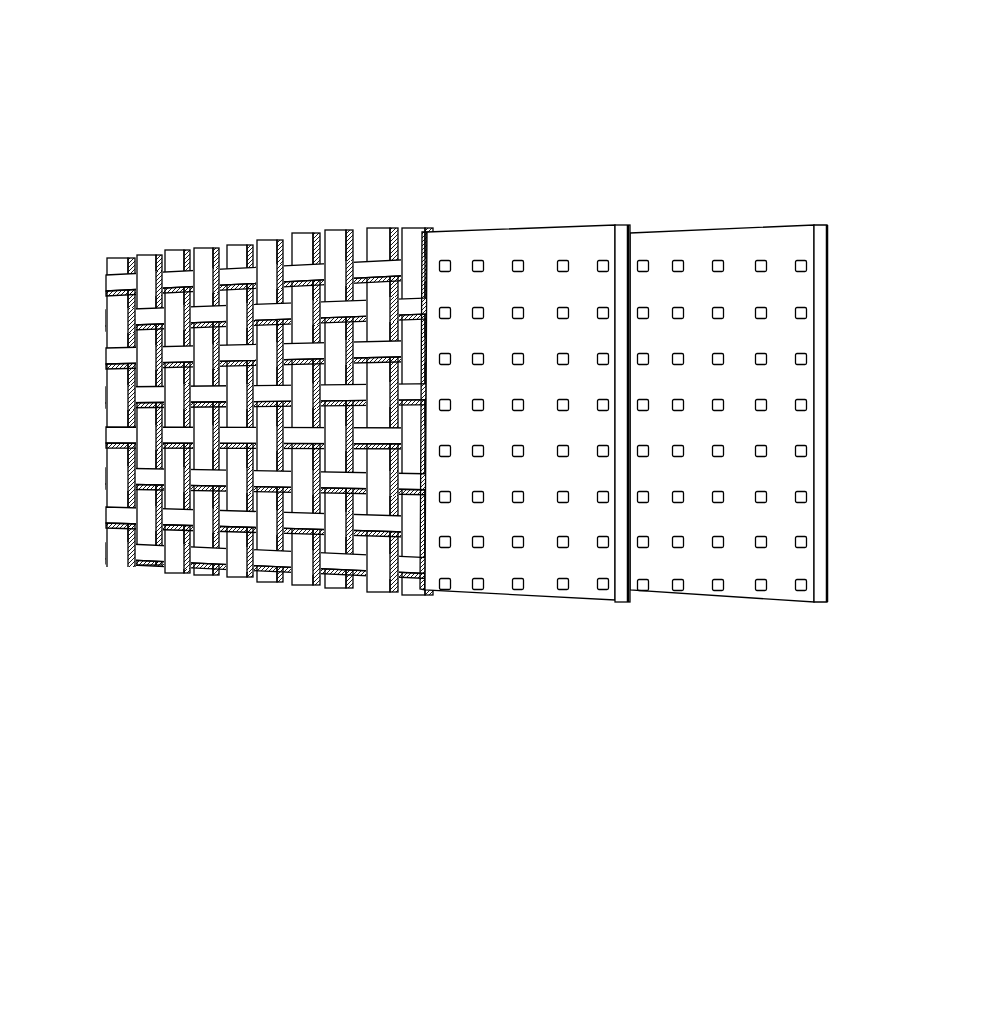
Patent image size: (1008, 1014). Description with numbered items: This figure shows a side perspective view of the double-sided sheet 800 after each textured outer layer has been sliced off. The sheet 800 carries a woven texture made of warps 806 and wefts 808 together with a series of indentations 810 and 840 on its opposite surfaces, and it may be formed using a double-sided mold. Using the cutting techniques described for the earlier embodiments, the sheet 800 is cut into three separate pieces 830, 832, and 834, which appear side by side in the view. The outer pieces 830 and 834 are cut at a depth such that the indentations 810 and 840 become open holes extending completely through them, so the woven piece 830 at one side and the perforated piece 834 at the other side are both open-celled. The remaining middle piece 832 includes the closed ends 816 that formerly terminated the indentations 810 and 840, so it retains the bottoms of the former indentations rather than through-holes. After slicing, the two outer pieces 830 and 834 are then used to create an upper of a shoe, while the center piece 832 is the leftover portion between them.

The sheet 800 is at (187, 155).
The warps 806 is at (148, 468).
The wefts 808 is at (170, 488).
The indentations 810 is at (150, 372).
The closed ends 816 is at (558, 258).
The piece 830 is at (148, 300).
The piece 832 is at (540, 272).
The piece 834 is at (785, 293).
The indentations 840 is at (800, 404).